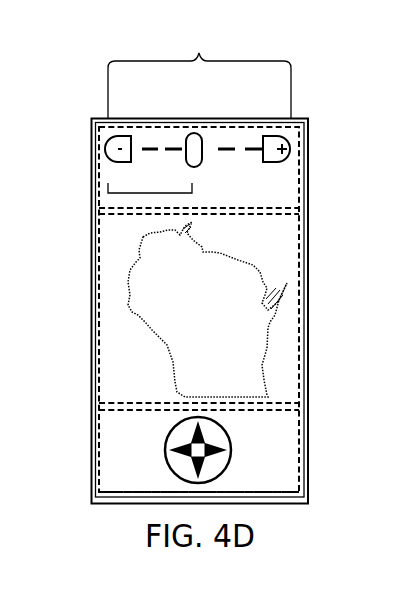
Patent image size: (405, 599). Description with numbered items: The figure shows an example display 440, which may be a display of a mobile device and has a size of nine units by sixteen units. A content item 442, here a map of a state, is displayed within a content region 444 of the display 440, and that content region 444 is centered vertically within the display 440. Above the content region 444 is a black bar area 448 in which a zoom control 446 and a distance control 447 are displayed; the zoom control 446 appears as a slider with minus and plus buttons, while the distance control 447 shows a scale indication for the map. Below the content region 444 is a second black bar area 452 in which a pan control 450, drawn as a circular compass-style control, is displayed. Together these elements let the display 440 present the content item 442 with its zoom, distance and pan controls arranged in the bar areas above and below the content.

The display 440 is at (92, 118).
The content item 442 is at (192, 328).
The content region 444 is at (258, 246).
The zoom control 446 is at (198, 98).
The distance control 447 is at (112, 194).
The black bar area 448 is at (288, 180).
The pan control 450 is at (231, 448).
The black bar area 452 is at (113, 477).